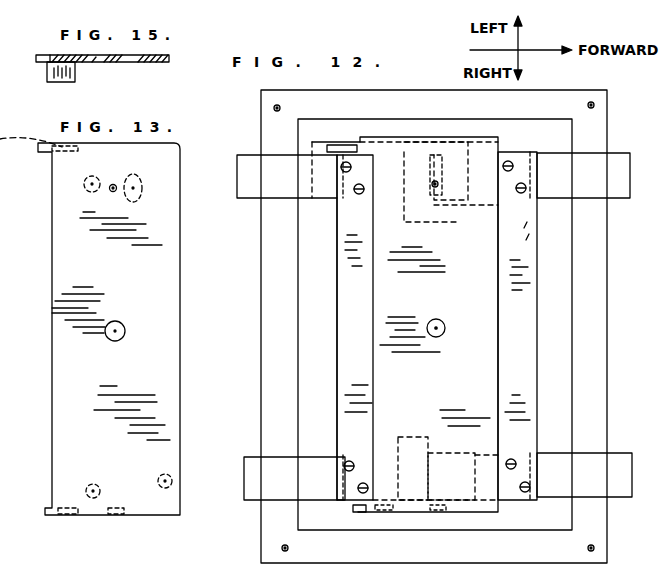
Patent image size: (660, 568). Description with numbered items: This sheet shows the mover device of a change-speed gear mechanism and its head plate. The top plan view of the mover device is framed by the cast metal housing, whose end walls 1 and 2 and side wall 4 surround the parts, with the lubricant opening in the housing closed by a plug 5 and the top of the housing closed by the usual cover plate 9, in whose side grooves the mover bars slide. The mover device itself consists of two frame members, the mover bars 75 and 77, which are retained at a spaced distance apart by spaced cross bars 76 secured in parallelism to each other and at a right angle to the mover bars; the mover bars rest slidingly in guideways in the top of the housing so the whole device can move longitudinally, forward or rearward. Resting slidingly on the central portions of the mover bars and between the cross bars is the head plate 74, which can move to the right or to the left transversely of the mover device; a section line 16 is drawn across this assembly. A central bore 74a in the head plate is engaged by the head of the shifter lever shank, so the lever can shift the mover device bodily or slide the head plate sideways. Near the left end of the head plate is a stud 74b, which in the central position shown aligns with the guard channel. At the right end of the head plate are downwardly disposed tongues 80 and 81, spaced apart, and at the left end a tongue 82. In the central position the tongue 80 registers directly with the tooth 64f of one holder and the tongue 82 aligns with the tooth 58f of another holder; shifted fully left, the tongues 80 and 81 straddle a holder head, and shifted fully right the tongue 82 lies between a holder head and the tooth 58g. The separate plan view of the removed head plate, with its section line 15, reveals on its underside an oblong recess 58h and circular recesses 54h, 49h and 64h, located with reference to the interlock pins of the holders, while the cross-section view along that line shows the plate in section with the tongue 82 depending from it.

In FIG. 12, the end wall 1 is at (608, 284).
In FIG. 12, the end wall 2 is at (261, 388).
In FIG. 12, the side wall 4 is at (575, 89).
In FIG. 12, the plug 5 is at (655, 283).
In FIG. 12, the cover plate 9 is at (655, 228).
In FIG. 13, the section line 15— 15 is at (55, 185).
In FIG. 12, the section line 16— 16 is at (345, 477).
In FIG. 13, the circular recess 49h is at (85, 489).
In FIG. 15, the circular recess 54h is at (96, 62).
In FIG. 13, the circular recess 54h is at (86, 188).
In FIG. 12, the tooth 58f is at (420, 140).
In FIG. 12, the tooth 58g is at (340, 145).
In FIG. 15, the oblong recess 58h is at (132, 62).
In FIG. 13, the oblong recess 58h is at (140, 180).
In FIG. 12, the tooth 64f is at (358, 512).
In FIG. 13, the circular recess 64h is at (181, 466).
In FIG. 13, the head plate 74 is at (190, 272).
In FIG. 12, the head plate 74 is at (499, 330).
In FIG. 13, the central bore 74a is at (120, 322).
In FIG. 12, the central bore 74a is at (440, 320).
In FIG. 13, the stud 74b is at (114, 184).
In FIG. 12, the stud 74b is at (438, 182).
In FIG. 12, the mover bar 75 is at (614, 158).
In FIG. 12, the cross bar 76 is at (337, 372).
In FIG. 12, the mover bar 77 is at (622, 497).
In FIG. 13, the tongue 80 is at (62, 516).
In FIG. 13, the tongue 81 is at (120, 516).
In FIG. 15, the tongue 82 is at (47, 70).